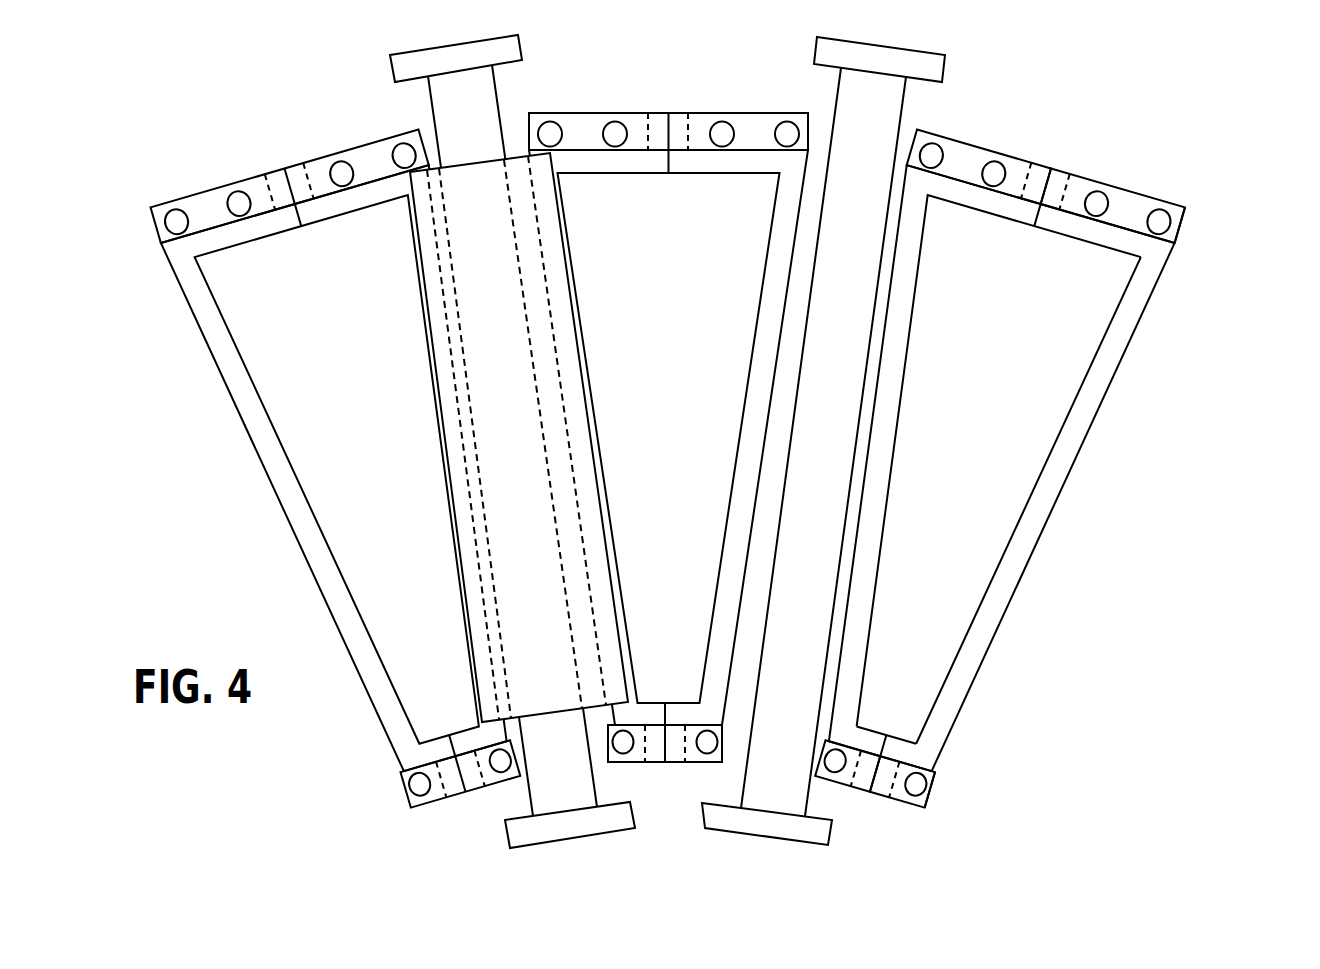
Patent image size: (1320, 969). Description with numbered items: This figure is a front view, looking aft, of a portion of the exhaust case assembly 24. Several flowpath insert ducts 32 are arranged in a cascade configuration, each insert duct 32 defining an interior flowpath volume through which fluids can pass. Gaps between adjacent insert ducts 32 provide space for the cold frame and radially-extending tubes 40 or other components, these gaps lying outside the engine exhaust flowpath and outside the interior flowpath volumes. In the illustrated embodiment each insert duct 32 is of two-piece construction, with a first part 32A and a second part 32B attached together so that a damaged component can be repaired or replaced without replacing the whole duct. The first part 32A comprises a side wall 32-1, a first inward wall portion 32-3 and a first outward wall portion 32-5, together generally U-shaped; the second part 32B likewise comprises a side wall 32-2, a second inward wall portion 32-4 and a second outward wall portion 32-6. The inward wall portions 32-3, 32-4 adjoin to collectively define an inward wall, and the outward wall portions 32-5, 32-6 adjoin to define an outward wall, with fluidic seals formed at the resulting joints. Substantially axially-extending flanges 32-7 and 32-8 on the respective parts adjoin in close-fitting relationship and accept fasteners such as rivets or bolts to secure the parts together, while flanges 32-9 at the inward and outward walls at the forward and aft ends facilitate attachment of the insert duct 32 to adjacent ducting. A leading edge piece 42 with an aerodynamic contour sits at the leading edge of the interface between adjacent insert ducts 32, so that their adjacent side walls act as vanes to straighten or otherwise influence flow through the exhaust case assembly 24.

The exhaust case assembly 24 is at (726, 463).
The flowpath insert duct 32 is at (282, 506).
The first part 32A is at (1105, 398).
The second part 32B is at (822, 698).
The side wall 32-1 is at (1048, 533).
The side wall 32-2 is at (902, 250).
The first inward wall portion 32-3 is at (915, 757).
The second inward wall portion 32-4 is at (855, 737).
The first outward wall portion 32-5 is at (1122, 242).
The second outward wall portion 32-6 is at (963, 197).
The axially-extending flange 32-7 is at (1060, 170).
The axially-extending flange 32-8 is at (1047, 163).
The flange 32-9 is at (1180, 228).
The radially-extending tube 40 is at (723, 830).
The leading edge piece 42 is at (512, 707).